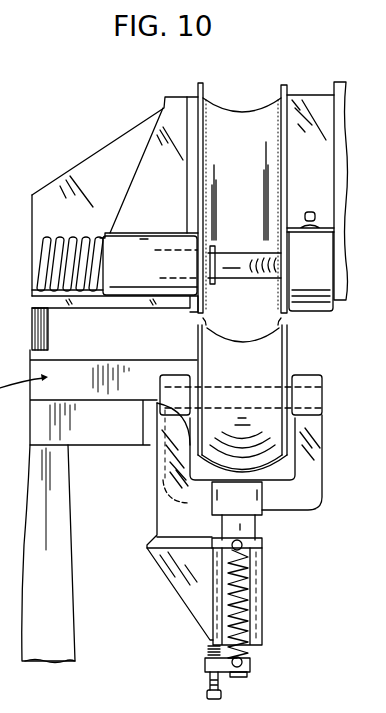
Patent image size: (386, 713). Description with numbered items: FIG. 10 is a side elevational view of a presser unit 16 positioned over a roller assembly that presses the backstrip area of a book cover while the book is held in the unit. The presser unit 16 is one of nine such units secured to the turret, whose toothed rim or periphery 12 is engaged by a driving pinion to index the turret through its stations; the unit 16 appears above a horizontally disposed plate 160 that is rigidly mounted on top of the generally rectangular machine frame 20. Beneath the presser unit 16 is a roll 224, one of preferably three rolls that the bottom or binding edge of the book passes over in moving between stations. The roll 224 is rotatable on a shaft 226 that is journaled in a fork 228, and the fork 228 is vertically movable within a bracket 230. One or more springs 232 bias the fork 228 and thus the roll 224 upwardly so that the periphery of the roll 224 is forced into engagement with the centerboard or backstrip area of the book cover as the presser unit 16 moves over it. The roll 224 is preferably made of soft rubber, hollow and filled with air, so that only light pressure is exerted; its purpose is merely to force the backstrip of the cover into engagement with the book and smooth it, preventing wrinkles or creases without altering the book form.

The presser unit 16 is at (118, 167).
The rim or periphery 12 is at (48, 339).
The roll 224 is at (208, 353).
The shaft 226 is at (268, 387).
The plate 160 is at (88, 440).
The machine frame 20 is at (65, 514).
The fork 228 is at (283, 500).
The bracket 230 is at (187, 606).
The springs 232 is at (250, 578).